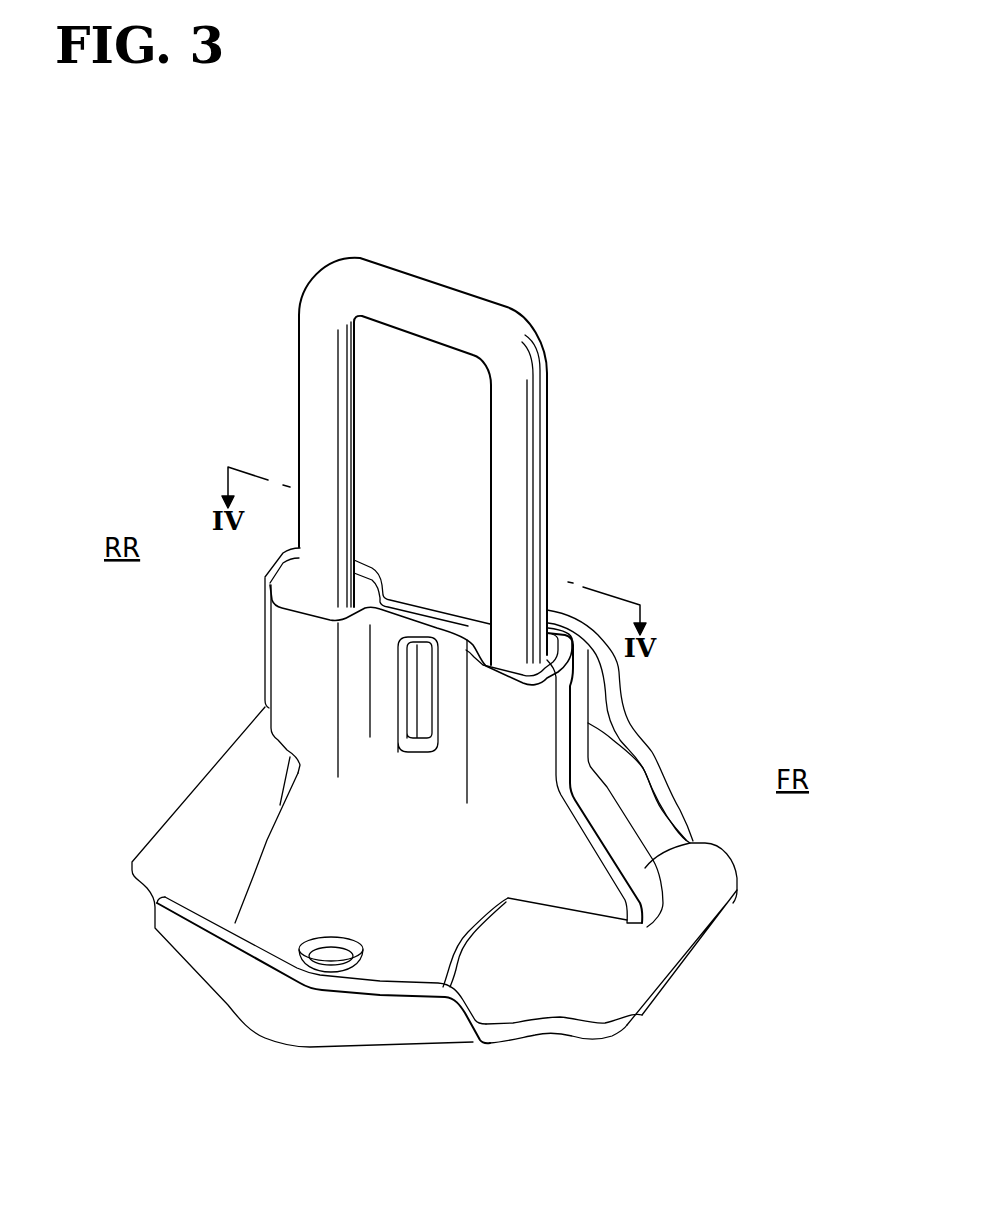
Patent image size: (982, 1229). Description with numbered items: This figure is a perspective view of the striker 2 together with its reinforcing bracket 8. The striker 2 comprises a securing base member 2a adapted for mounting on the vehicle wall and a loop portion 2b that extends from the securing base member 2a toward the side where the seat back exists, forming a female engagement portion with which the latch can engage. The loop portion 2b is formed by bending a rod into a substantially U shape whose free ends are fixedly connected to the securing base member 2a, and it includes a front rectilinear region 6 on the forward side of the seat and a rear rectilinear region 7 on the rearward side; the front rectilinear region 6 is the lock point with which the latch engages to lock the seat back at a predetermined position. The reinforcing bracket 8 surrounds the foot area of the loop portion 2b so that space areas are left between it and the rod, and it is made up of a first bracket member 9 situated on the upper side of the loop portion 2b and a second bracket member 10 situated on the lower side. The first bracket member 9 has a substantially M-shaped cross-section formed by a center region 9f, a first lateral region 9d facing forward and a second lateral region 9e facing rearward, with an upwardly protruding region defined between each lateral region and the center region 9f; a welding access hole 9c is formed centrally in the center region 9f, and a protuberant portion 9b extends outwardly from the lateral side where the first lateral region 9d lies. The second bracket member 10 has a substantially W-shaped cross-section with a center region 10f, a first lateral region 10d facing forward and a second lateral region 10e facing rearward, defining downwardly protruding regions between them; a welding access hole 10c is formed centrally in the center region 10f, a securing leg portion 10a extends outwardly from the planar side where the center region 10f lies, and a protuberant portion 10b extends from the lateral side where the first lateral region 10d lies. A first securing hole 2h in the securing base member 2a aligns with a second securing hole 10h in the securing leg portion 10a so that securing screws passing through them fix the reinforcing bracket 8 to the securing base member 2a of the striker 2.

The striker 2 is at (547, 395).
The securing base member 2a is at (535, 998).
The loop portion 2b is at (310, 372).
The first securing hole 2h is at (328, 960).
The front rectilinear region 6 is at (532, 460).
The rear rectilinear region 7 is at (310, 450).
The reinforcing bracket 8 is at (280, 680).
The first bracket member 9 is at (575, 691).
The protuberant portion 9b is at (705, 845).
The welding access hole 9c is at (417, 658).
The first lateral region 9d is at (578, 787).
The second lateral region 9e is at (281, 563).
The center region 9f is at (398, 597).
The second bracket member 10 is at (485, 887).
The securing leg portion 10a is at (282, 926).
The protuberant portion 10b is at (637, 920).
The welding access hole 10c is at (394, 729).
The first lateral region 10d is at (555, 740).
The second lateral region 10e is at (280, 587).
The center region 10f is at (380, 655).
The second securing hole 10h is at (328, 950).